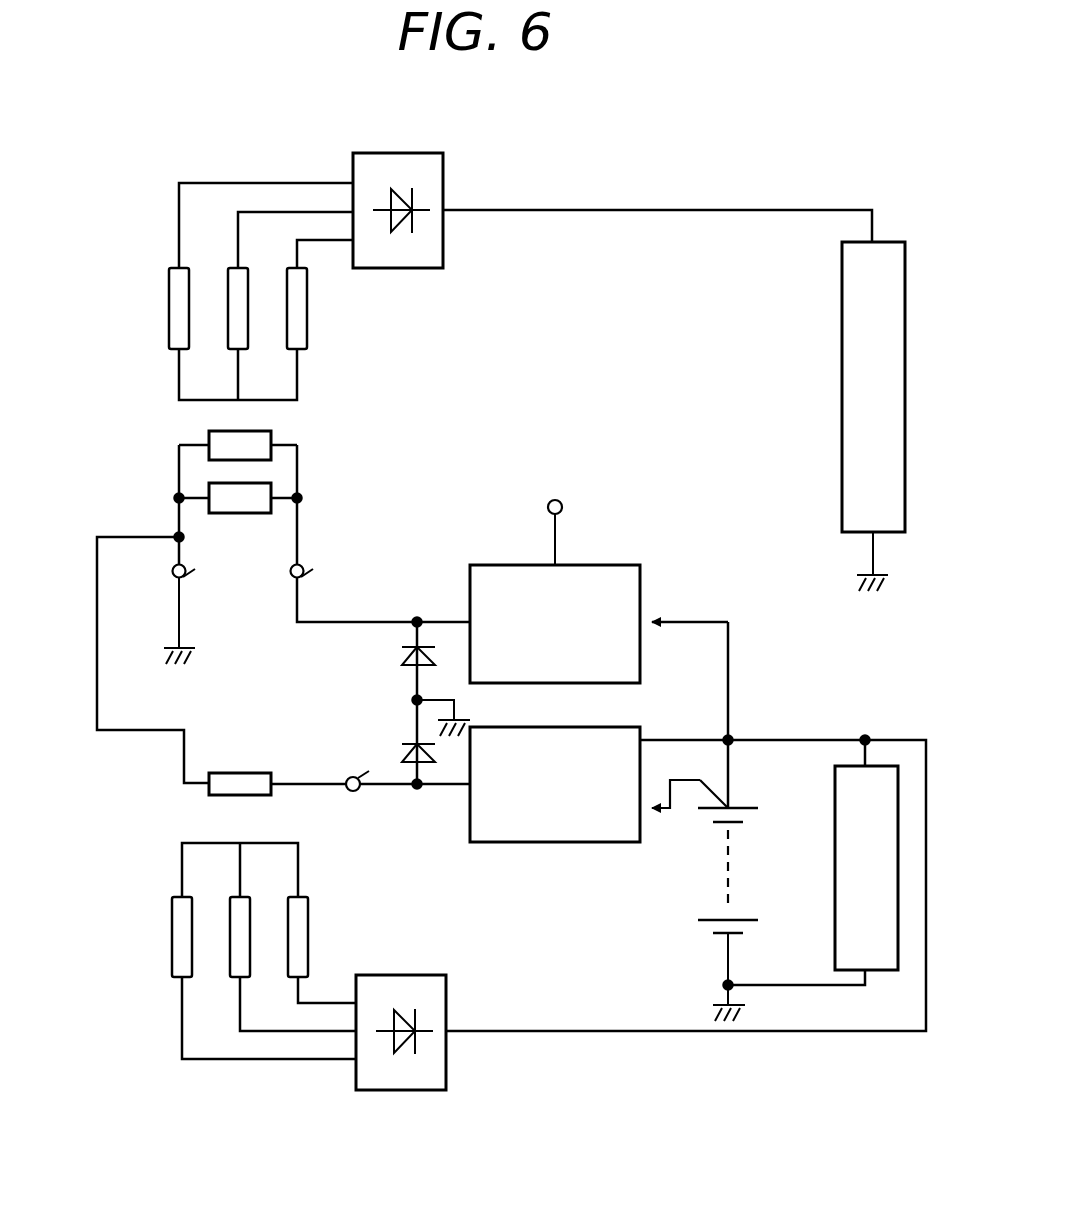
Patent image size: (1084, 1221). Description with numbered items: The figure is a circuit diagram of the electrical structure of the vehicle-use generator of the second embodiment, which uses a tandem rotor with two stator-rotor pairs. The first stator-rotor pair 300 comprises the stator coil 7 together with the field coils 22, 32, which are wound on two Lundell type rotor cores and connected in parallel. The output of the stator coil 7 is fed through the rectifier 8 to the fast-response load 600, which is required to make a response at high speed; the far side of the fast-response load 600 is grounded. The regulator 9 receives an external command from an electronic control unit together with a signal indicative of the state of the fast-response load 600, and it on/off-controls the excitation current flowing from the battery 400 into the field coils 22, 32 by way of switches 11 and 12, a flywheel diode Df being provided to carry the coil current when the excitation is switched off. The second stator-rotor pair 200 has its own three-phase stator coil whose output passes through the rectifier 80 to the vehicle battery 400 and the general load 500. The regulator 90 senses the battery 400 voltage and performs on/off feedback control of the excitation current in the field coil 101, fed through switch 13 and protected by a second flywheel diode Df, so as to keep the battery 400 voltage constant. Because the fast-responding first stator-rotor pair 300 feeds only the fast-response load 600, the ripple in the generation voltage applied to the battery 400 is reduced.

The stator coil 7 is at (328, 316).
The rectifier 8 is at (423, 153).
The regulator 9 is at (612, 565).
The switch 11 is at (174, 577).
The switch 12 is at (292, 577).
The switch 13 is at (348, 778).
The field coil 22 is at (271, 431).
The field coil 32 is at (271, 483).
The rectifier 80 is at (423, 975).
The regulator 90 is at (630, 727).
The field coil 101 is at (253, 773).
The second stator-rotor pair 200 is at (150, 835).
The first stator-rotor pair 300 is at (219, 291).
The vehicle battery 400 is at (712, 857).
The general load 500 is at (883, 766).
The fast-response load 600 is at (888, 233).
The flywheel diode Df is at (402, 649).